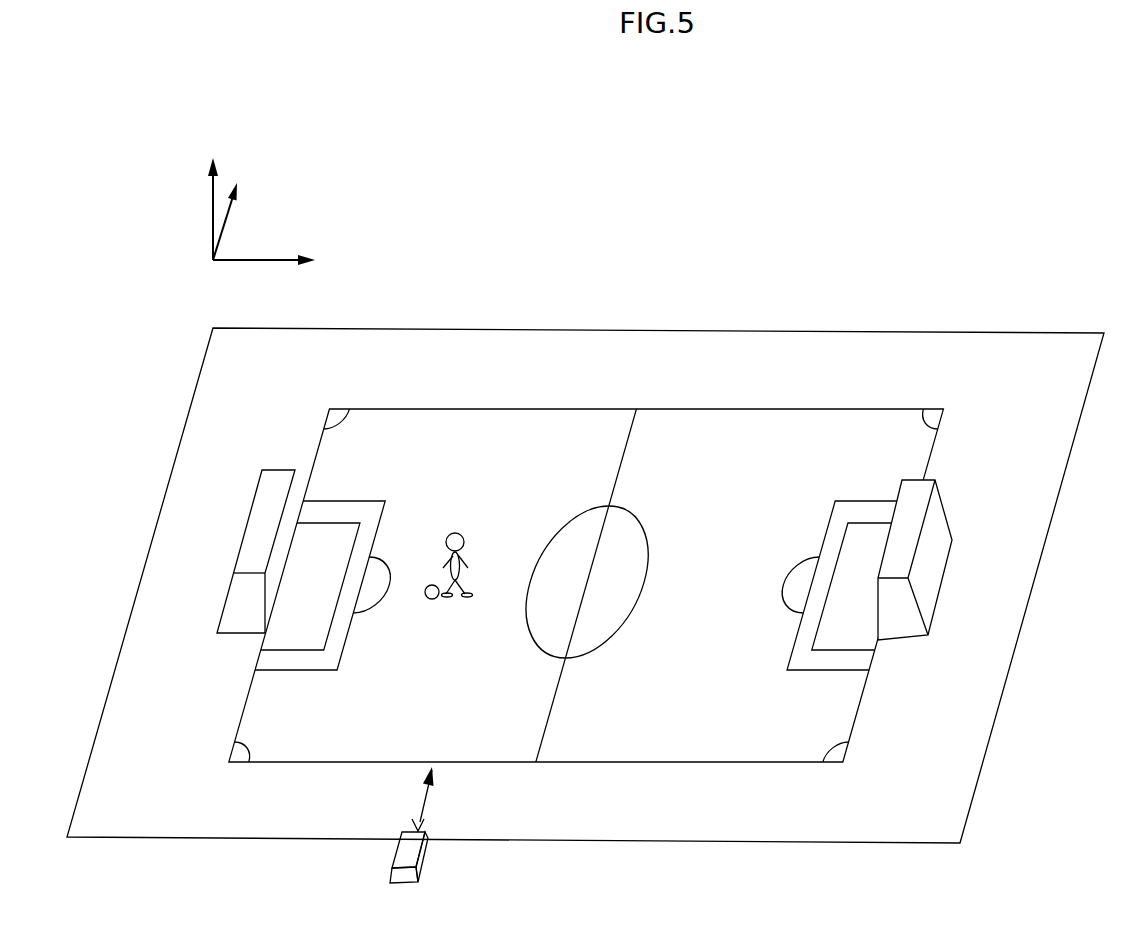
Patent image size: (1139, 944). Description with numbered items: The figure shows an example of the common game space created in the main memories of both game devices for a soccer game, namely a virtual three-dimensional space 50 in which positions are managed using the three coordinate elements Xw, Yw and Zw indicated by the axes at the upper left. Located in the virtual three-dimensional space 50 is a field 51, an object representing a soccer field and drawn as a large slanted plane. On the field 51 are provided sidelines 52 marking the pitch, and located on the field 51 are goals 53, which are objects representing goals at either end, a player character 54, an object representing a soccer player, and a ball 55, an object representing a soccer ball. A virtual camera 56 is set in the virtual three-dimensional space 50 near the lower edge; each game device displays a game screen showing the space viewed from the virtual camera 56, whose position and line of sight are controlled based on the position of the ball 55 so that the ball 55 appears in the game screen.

The virtual three-dimensional space 50 is at (483, 236).
The field 51 is at (808, 355).
The sidelines 52 is at (863, 410).
The goals 53 is at (225, 602).
The player characters 54 is at (457, 532).
The ball 55 is at (430, 600).
The virtual camera 56 is at (428, 854).